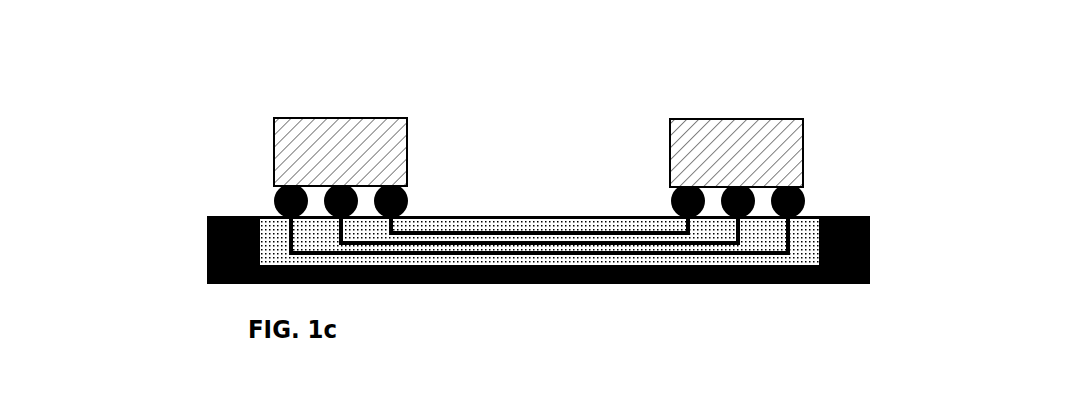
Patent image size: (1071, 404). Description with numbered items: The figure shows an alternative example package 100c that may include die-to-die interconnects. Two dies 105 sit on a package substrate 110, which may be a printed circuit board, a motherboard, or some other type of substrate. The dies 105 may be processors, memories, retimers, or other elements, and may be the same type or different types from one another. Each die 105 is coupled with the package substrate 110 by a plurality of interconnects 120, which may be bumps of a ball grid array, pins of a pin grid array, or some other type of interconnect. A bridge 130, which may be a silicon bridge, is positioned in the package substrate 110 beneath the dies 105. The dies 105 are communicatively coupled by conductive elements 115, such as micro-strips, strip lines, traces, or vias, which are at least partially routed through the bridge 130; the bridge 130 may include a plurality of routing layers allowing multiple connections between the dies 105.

The package 100c is at (162, 237).
The dies 105 is at (554, 131).
The package substrate 110 is at (579, 269).
The conductive elements 115 is at (539, 203).
The interconnects 120 is at (473, 169).
The bridge 130 is at (539, 287).